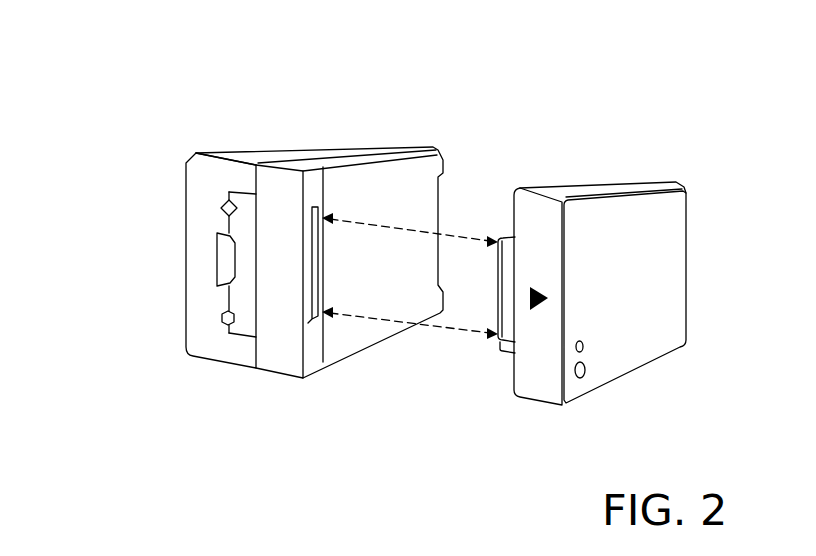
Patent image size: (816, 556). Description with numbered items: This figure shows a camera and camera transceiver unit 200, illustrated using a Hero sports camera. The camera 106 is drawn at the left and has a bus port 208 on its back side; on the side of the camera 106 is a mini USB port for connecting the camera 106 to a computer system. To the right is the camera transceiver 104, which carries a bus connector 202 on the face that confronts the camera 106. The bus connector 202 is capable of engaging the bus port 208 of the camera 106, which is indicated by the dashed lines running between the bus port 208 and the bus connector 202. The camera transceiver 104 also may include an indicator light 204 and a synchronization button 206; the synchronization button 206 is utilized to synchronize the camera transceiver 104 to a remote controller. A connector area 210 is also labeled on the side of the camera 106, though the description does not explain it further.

The camera and camera transceiver unit 200 is at (150, 128).
The camera 106 is at (307, 152).
The camera transceiver 104 is at (628, 178).
The bus connector 202 is at (502, 345).
The indicator light 204 is at (586, 375).
The synchronization button 206 is at (586, 348).
The bus port 208 is at (308, 322).
The connector port 210 is at (213, 267).